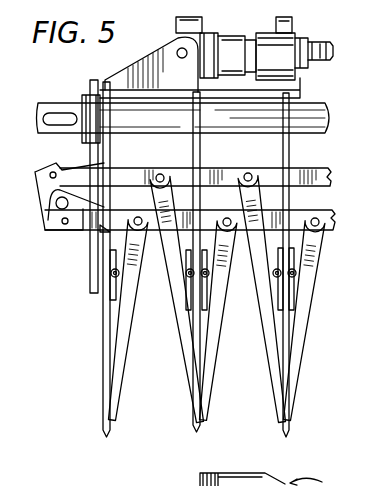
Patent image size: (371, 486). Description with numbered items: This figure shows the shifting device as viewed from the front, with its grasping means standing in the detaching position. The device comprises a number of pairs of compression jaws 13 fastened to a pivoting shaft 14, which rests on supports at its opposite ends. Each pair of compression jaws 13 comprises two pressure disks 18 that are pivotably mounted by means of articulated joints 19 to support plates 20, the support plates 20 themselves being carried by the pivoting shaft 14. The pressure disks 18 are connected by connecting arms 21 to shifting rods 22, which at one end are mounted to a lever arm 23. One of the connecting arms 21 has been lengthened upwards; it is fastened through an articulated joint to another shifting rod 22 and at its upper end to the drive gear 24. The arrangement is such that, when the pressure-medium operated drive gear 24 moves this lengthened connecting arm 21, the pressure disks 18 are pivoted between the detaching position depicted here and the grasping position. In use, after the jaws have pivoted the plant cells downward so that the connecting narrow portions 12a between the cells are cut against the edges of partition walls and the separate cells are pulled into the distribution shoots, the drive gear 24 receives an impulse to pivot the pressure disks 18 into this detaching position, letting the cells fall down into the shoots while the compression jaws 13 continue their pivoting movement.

The connecting narrow portion 12a is at (370, 347).
The compression jaw 13 is at (171, 419).
The pivoting shaft 14 is at (224, 128).
The pressure disk 18 is at (283, 377).
The articulated joint 19 is at (187, 276).
The support plate 20 is at (288, 113).
The connecting arm 21 is at (262, 280).
The shifting rod 22 is at (312, 170).
The lever arm 23 is at (45, 235).
The drive gear 24 is at (332, 52).